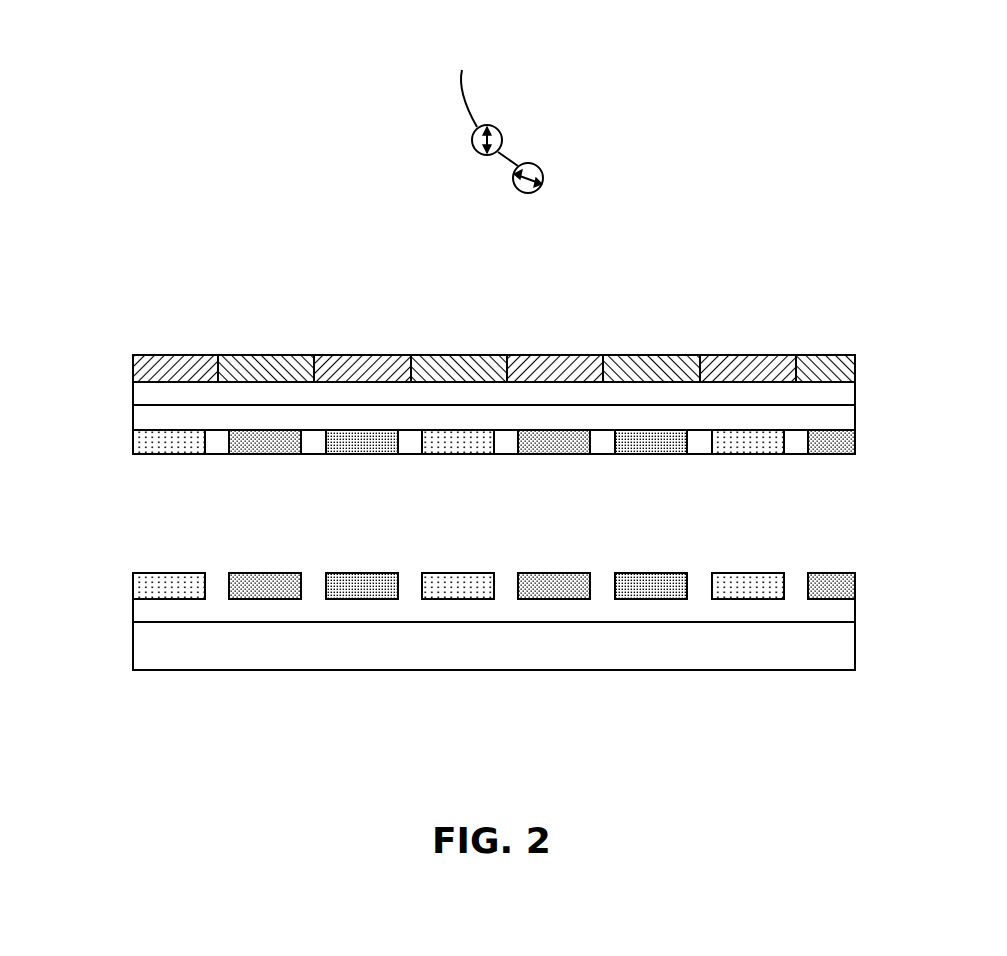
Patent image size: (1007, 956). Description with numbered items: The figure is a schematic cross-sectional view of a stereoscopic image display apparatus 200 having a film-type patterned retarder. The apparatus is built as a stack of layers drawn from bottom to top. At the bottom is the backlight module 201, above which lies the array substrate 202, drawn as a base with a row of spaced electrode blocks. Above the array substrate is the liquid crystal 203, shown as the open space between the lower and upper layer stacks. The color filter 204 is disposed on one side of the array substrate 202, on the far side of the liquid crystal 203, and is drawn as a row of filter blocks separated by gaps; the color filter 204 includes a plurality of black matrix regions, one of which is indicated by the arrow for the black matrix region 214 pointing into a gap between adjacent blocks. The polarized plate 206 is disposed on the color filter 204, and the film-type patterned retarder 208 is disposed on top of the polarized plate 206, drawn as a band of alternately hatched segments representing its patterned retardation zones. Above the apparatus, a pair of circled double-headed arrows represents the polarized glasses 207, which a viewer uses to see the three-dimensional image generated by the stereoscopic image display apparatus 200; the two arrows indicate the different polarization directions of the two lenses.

The stereoscopic image display apparatus 200 is at (997, 143).
The backlight module 201 is at (840, 648).
The array substrate 202 is at (867, 574).
The liquid crystal 203 is at (867, 460).
The color filter 204 is at (867, 406).
The polarized plate 206 is at (840, 393).
The polarized glasses 207 is at (520, 117).
The film-type patterned retarder 208 is at (846, 367).
The black matrix region 214 is at (217, 442).